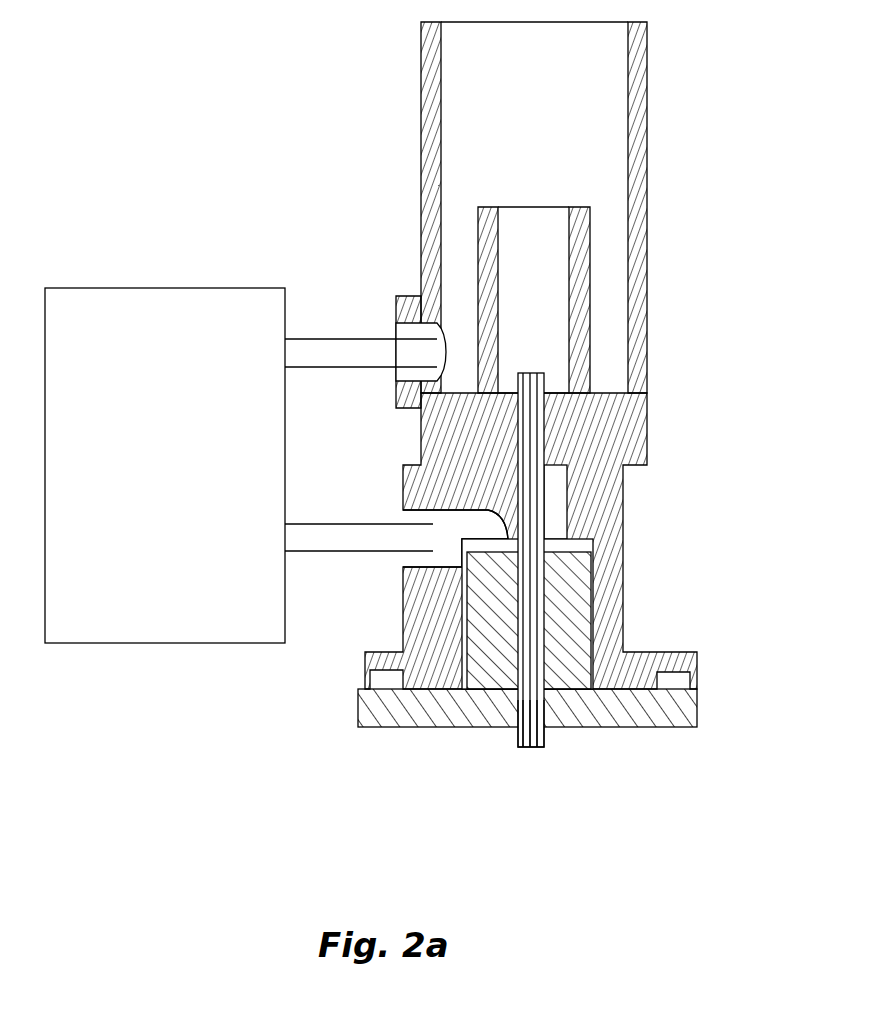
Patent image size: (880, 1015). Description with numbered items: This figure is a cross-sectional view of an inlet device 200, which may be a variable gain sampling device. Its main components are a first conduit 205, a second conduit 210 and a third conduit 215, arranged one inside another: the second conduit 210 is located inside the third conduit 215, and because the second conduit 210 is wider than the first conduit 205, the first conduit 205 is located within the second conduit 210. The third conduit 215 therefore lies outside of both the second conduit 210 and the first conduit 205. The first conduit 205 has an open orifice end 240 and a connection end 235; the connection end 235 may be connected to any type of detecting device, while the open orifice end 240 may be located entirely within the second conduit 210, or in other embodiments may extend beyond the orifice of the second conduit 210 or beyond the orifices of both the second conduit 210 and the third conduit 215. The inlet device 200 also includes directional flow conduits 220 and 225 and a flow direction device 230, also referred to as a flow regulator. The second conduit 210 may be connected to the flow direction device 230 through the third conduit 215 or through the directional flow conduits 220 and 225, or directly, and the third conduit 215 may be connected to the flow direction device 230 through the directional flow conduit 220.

The inlet device 200 is at (251, 54).
The first conduit 205 is at (547, 475).
The second conduit 210 is at (573, 267).
The third conduit 215 is at (649, 42).
The directional flow conduit 220 is at (407, 302).
The directional flow conduit 225 is at (417, 518).
The flow direction device 230 is at (130, 302).
The connection end 235 is at (543, 733).
The open orifice end 240 is at (518, 373).